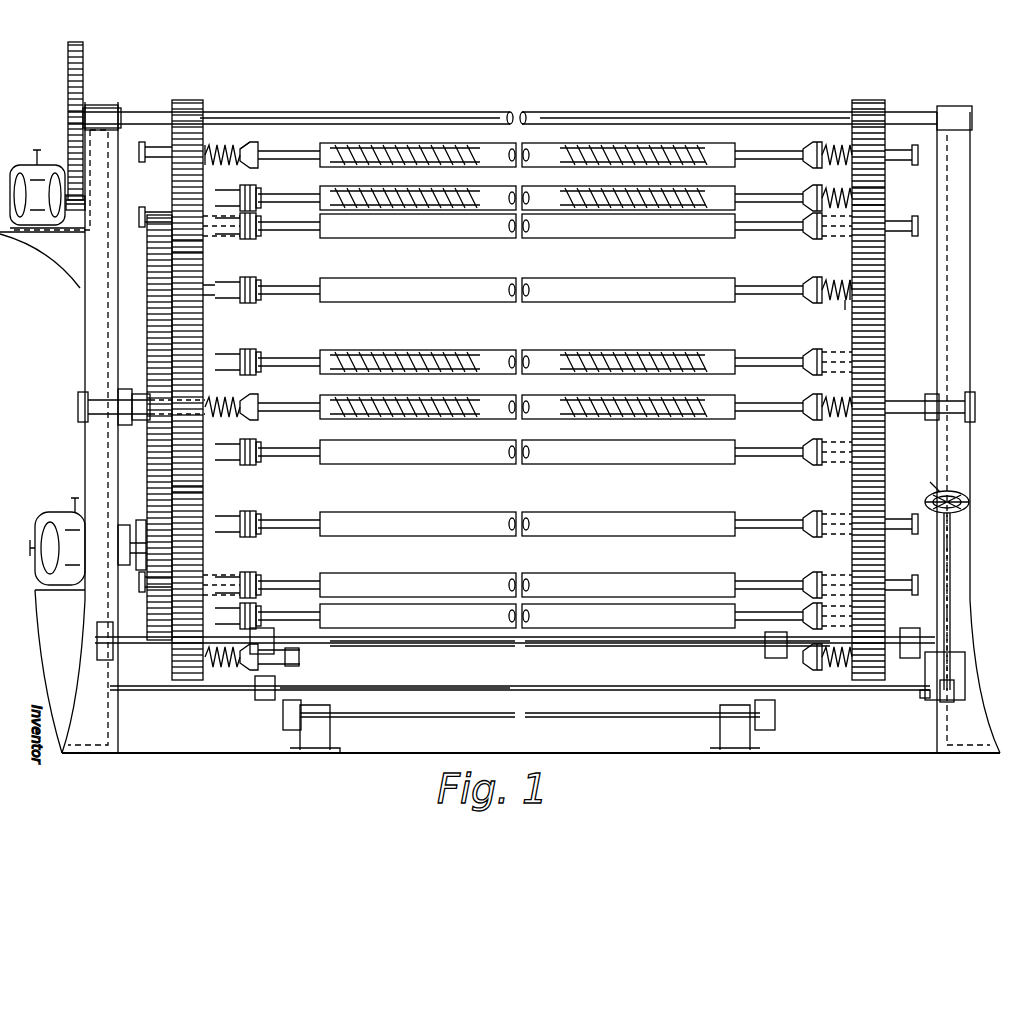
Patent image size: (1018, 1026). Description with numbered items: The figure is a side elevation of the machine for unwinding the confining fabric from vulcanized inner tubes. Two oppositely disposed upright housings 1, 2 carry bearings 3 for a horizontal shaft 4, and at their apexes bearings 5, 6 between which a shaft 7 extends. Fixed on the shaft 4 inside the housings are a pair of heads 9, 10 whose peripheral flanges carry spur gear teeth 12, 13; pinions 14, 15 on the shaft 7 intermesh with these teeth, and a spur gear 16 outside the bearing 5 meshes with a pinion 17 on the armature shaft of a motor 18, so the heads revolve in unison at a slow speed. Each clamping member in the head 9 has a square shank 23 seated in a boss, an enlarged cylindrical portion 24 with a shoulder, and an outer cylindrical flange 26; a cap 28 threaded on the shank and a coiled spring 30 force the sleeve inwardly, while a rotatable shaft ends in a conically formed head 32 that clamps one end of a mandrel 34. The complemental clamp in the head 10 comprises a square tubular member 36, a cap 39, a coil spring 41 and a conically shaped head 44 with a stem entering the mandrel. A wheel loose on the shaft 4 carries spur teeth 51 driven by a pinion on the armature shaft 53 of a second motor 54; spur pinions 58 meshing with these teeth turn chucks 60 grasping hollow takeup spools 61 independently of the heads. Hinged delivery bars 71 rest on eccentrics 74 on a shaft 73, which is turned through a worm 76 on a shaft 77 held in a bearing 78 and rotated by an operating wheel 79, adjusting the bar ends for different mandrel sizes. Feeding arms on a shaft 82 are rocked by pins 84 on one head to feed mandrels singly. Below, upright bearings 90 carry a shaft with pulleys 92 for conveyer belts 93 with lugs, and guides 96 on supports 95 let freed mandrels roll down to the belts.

The upright housing 1 is at (500, 427).
The upright housing 2 is at (968, 432).
The bearing 3 is at (970, 394).
The horizontal shaft 4 is at (78, 408).
The bearing 5 is at (118, 108).
The bearing 6 is at (960, 112).
The shaft 7 is at (455, 116).
The head 9 is at (203, 488).
The head 10 is at (885, 205).
The spur gear teeth 12 is at (198, 252).
The spur gear teeth 13 is at (885, 188).
The pinion 14 is at (198, 103).
The pinion 15 is at (872, 106).
The spur gear 16 is at (84, 56).
The pinion 17 is at (85, 206).
The motor 18 is at (47, 189).
The shank 23 is at (220, 146).
The enlarged cylindrical portion 24 is at (158, 210).
The cylindrical flange 26 is at (165, 148).
The cap 28 is at (258, 147).
The coiled spring 30 is at (231, 163).
The conically formed head 32 is at (268, 150).
The mandrel 34 is at (300, 160).
The square tubular member 36 is at (845, 319).
The cap 39 is at (832, 302).
The coil spring 41 is at (838, 286).
The conically-shaped head 44 is at (810, 303).
The spur teeth 51 is at (147, 330).
The armature shaft 53 is at (34, 590).
The motor 54 is at (72, 506).
The spur pinion 58 is at (236, 290).
The chuck 60 is at (258, 282).
The takeup spool 61 is at (305, 284).
The hinged bar 71 is at (322, 616).
The shaft 73 is at (372, 648).
The eccentric 74 is at (292, 655).
The worm 76 is at (960, 646).
The shaft 77 is at (951, 545).
The bearing 78 is at (956, 690).
The operating wheel 79 is at (969, 502).
The shaft 82 is at (104, 662).
The pin 84 is at (222, 352).
The upright bearing 90 is at (332, 736).
The pulley 92 is at (422, 686).
The conveyer belt 93 is at (312, 706).
The support 95 is at (216, 692).
The guide 96 is at (262, 700).